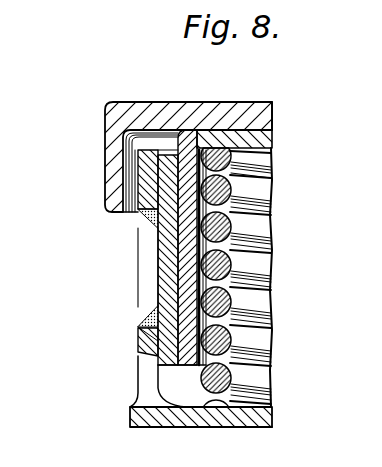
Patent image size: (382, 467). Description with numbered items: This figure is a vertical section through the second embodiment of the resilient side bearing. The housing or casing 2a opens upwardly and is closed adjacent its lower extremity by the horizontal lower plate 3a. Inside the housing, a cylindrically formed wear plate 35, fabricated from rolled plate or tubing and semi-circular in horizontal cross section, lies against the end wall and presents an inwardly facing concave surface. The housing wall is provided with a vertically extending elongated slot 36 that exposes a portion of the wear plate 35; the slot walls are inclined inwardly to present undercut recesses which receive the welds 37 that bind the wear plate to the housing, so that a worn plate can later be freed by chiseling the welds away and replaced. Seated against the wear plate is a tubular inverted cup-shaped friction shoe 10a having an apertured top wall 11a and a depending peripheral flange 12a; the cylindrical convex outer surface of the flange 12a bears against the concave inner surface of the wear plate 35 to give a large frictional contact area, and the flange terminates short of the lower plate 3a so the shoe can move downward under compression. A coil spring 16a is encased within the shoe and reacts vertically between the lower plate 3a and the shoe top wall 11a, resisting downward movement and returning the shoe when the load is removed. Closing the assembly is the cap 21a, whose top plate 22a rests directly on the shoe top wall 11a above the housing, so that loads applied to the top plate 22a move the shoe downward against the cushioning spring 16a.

The cap 21a is at (191, 102).
The top plate 22a is at (251, 102).
The friction shoe 10a is at (268, 137).
The shoe top wall 11a is at (274, 143).
The coil spring 16a is at (264, 270).
The welds 37 is at (138, 219).
The slots 36 is at (142, 250).
The wear plate 35 is at (160, 275).
The peripheral flange 12a is at (185, 367).
The housing 2a is at (163, 423).
The lower plate 3a is at (238, 422).